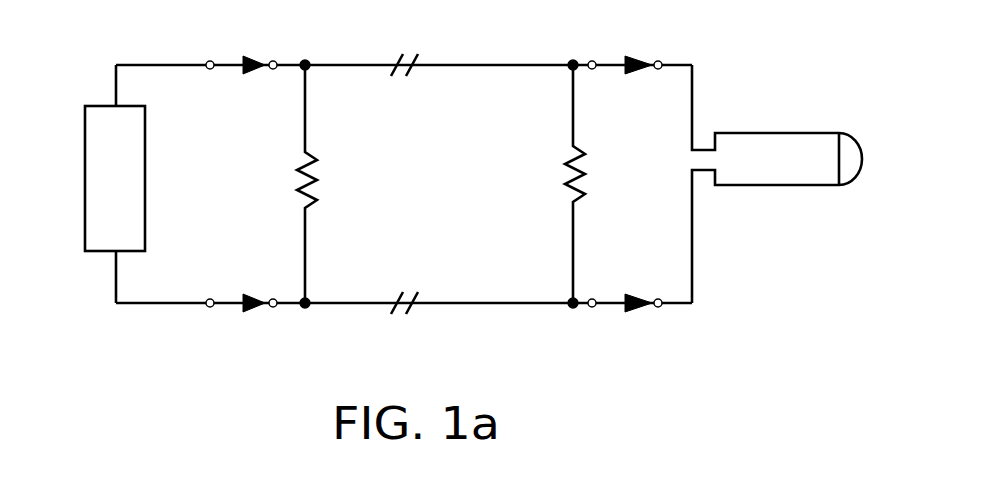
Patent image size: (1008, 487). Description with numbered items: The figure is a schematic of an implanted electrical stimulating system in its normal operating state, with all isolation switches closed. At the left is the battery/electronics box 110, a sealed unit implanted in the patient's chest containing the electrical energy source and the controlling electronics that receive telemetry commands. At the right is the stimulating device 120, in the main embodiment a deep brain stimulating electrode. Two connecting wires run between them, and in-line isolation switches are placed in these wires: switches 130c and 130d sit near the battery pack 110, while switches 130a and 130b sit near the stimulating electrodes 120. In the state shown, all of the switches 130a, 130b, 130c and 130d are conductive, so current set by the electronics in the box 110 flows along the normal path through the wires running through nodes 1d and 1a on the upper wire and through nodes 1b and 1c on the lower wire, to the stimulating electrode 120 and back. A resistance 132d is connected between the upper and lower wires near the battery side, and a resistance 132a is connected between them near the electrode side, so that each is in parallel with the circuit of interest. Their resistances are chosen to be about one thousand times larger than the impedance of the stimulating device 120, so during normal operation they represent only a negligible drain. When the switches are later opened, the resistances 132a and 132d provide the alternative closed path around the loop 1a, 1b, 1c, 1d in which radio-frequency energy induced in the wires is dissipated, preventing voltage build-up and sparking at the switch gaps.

The battery/electronics box 110 is at (92, 108).
The stimulating device 120 is at (862, 88).
The switch 130a is at (672, 18).
The switch 130b is at (682, 345).
The switch 130c is at (262, 310).
The switch 130d is at (268, 60).
The resistance 132a is at (562, 197).
The resistance 132d is at (298, 197).
The node 1a is at (573, 57).
The node 1b is at (573, 317).
The node 1c is at (305, 317).
The node 1d is at (307, 63).